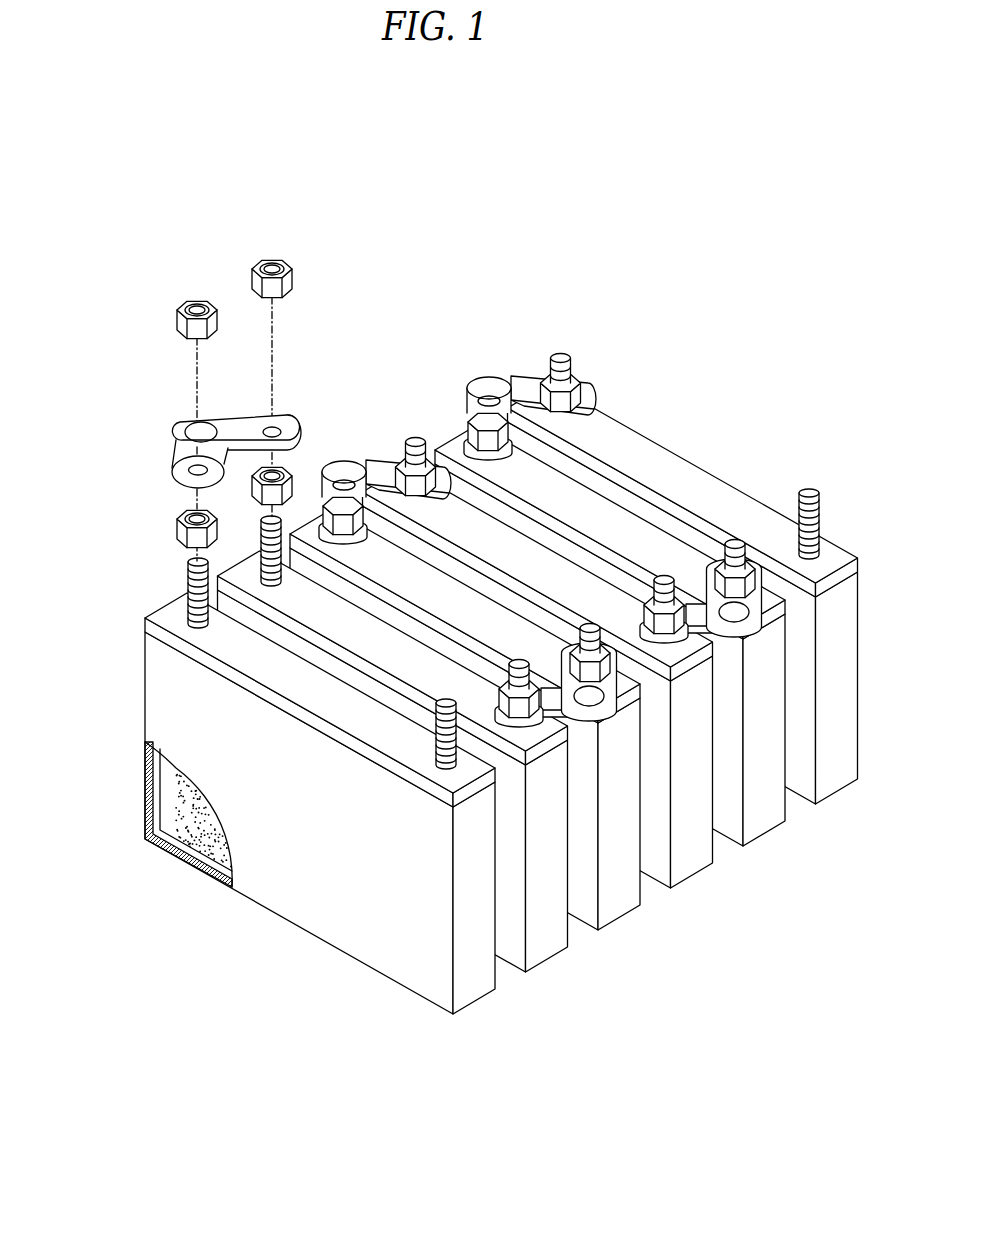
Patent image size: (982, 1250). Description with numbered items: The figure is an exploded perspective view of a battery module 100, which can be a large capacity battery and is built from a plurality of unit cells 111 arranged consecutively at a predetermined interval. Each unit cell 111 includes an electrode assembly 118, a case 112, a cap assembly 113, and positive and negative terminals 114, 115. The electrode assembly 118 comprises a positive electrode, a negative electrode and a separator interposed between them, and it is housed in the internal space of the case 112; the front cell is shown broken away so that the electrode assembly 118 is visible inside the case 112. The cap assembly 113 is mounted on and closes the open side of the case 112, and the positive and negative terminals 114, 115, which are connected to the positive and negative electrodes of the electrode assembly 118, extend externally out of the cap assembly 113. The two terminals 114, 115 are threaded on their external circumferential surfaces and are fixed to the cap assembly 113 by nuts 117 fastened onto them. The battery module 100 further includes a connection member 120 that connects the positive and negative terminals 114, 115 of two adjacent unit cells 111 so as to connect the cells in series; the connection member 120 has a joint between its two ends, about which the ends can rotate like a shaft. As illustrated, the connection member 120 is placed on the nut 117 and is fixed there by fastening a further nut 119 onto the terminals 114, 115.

The battery module 100 is at (461, 652).
The unit cell 111 is at (461, 731).
The case 112 is at (320, 823).
The cap assembly 113 is at (280, 700).
The positive terminal 114 is at (155, 593).
The negative terminal 115 is at (317, 494).
The nut 117 is at (157, 529).
The electrode assembly 118 is at (175, 826).
The nut 119 is at (206, 297).
The connection member 120 is at (190, 434).